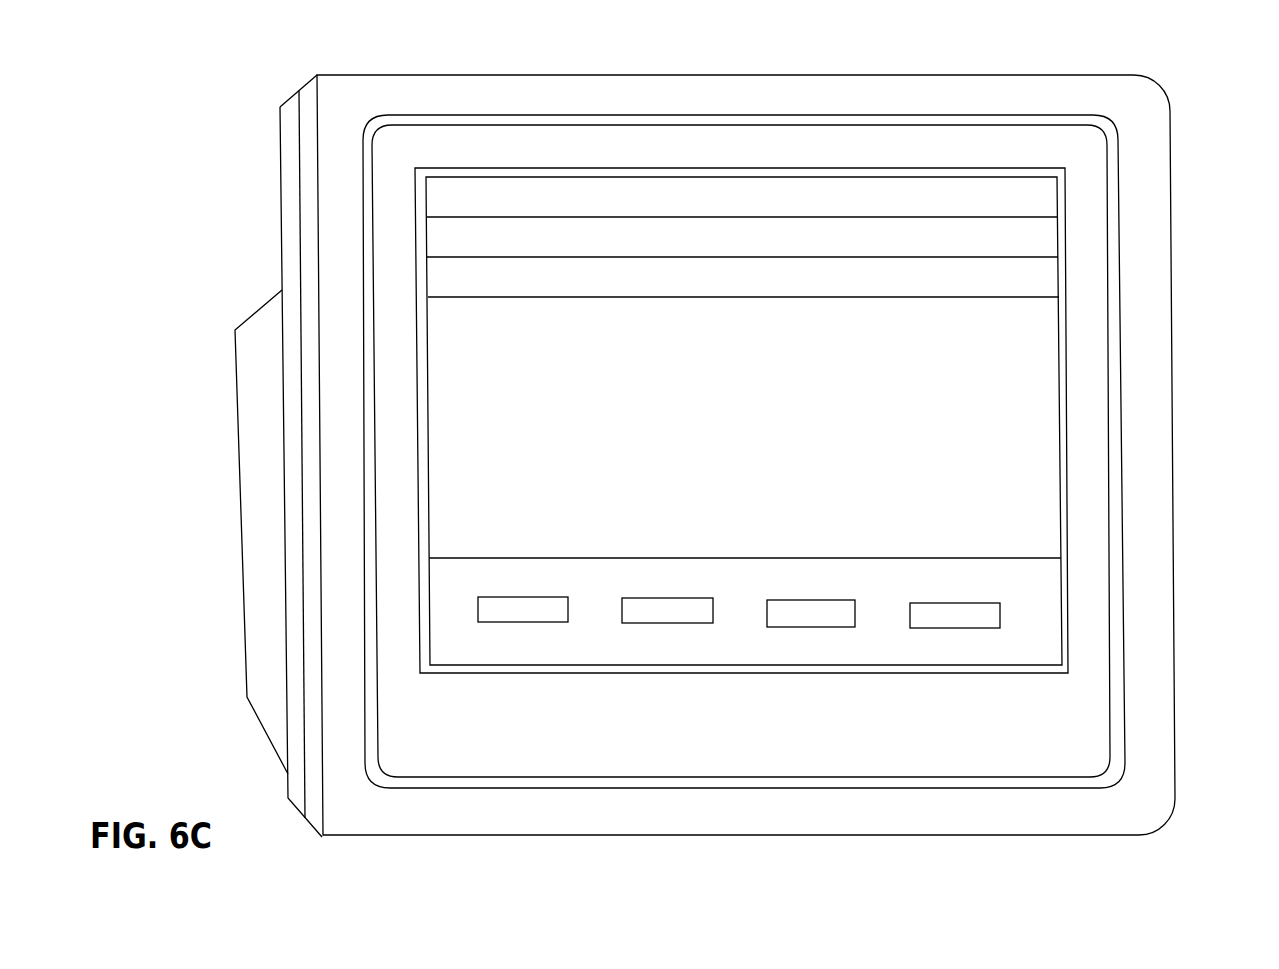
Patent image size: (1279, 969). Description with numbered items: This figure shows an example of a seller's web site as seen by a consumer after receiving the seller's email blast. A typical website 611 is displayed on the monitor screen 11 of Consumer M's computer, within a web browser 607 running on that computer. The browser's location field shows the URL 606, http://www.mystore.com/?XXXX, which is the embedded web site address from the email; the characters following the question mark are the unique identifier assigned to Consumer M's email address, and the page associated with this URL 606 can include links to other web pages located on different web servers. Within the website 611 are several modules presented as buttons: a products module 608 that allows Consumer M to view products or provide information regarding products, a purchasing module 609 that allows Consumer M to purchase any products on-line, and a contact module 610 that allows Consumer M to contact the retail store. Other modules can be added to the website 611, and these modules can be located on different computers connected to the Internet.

The web browser 607 is at (1171, 137).
The monitor screen 11 is at (1117, 330).
The website 611 is at (912, 157).
The URL 606 is at (883, 278).
The products module 608 is at (478, 608).
The purchasing module 609 is at (672, 623).
The contact module 610 is at (855, 612).